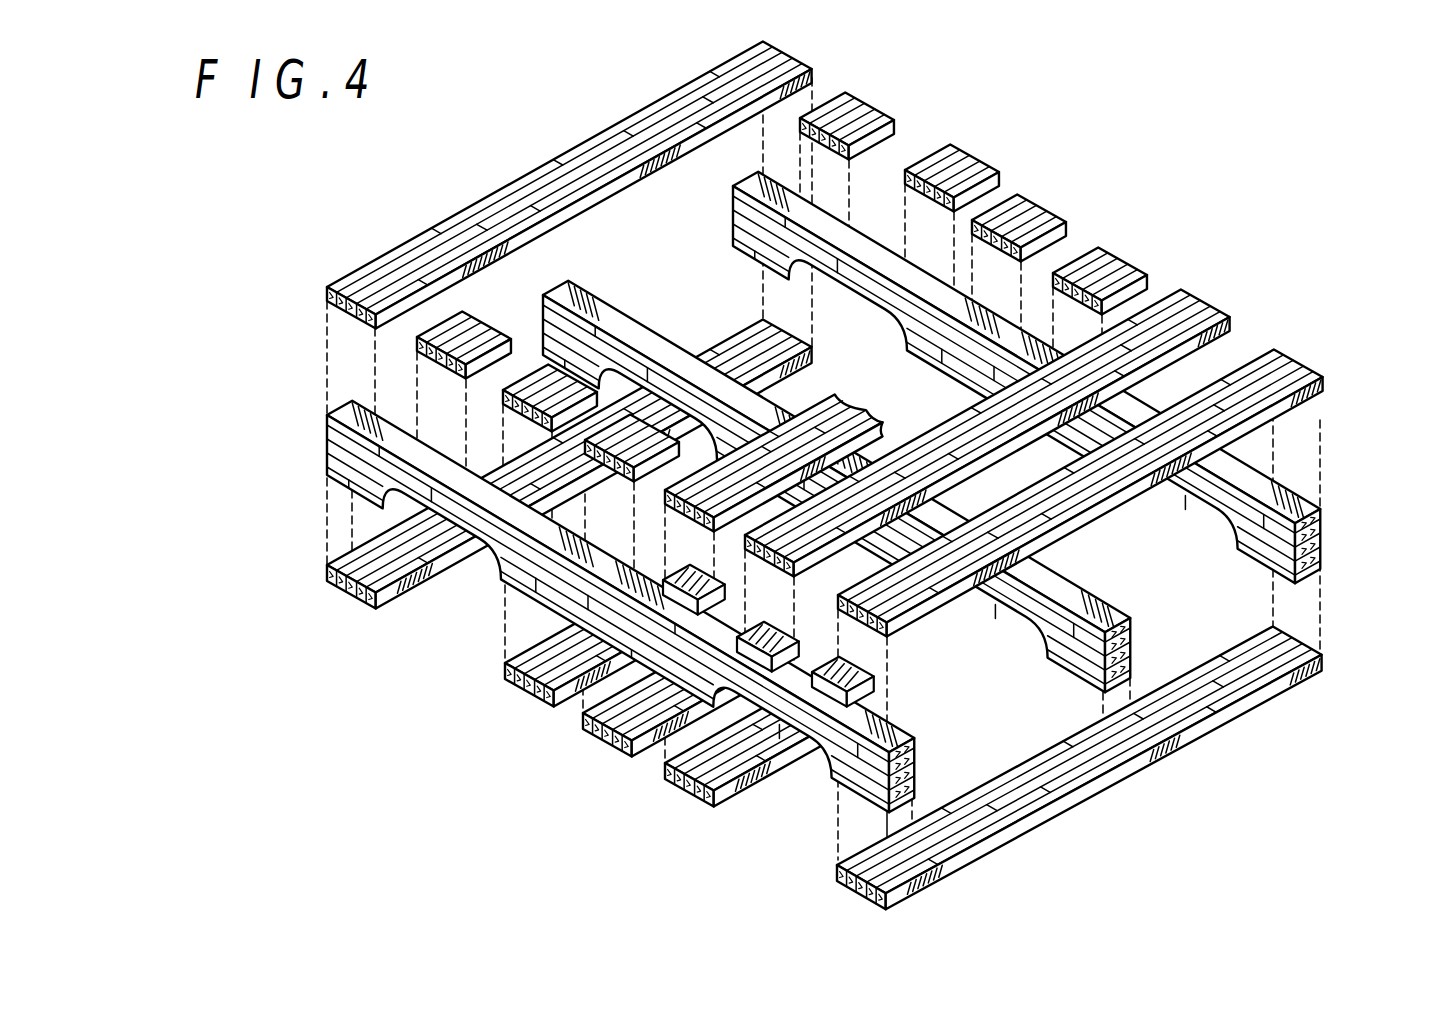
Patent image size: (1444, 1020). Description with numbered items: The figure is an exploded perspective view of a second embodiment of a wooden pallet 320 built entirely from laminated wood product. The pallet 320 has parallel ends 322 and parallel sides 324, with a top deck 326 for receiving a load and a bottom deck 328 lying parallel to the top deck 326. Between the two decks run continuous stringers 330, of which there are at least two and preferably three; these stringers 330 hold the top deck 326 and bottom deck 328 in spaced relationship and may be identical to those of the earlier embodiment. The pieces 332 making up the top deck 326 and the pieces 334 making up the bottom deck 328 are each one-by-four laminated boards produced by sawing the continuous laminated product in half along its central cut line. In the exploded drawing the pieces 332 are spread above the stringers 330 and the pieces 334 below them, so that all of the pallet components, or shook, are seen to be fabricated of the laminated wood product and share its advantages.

The pallet 320 is at (1097, 135).
The parallel ends 322 is at (468, 200).
The parallel sides 324 is at (1153, 293).
The top deck 326 is at (1282, 320).
The bottom deck 328 is at (750, 810).
The continuous stringers 330 is at (1285, 490).
The pieces of the top deck 332 is at (682, 92).
The pieces of the bottom deck 334 is at (336, 580).